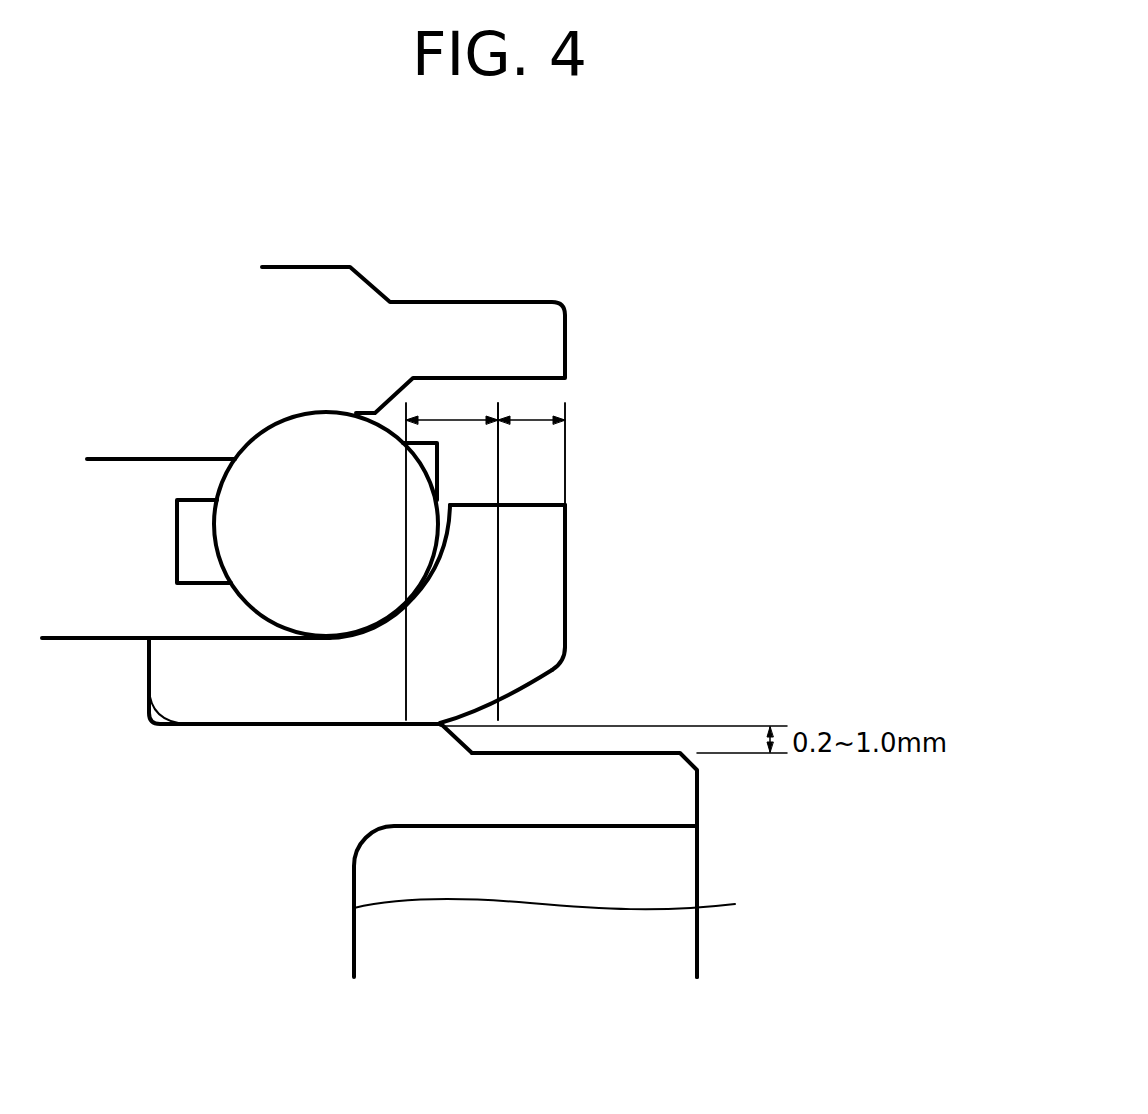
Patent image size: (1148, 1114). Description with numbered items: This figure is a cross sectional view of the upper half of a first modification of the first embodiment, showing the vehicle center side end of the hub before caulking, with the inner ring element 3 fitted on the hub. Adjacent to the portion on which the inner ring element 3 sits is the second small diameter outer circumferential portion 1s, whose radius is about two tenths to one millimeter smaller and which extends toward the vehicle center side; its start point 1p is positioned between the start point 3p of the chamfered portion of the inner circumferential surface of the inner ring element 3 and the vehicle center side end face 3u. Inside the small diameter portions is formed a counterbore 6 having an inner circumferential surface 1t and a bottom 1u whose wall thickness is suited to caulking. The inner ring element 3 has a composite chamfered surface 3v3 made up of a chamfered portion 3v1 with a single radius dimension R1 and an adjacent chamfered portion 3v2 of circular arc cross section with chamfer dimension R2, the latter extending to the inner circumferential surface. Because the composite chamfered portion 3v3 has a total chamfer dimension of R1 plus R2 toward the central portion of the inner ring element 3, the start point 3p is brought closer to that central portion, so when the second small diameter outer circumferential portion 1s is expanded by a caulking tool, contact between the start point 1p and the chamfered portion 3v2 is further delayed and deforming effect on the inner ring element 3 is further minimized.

The inner ring element 3 is at (532, 600).
The end face 3u is at (563, 515).
The start point of the chamfered portion 3p is at (403, 723).
The chamfered portion 3v1 is at (553, 670).
The chamfered portion 3v2 is at (503, 718).
The composite chamfered surface 3v3 is at (589, 660).
The start point of the second small diameter outer circumferential portion 1p is at (440, 723).
The second small diameter outer circumferential portion 1s is at (638, 753).
The inner circumferential surface 1t is at (560, 826).
The bottom 1u is at (575, 905).
The counterbore 6 is at (637, 952).
The radius dimension R1 is at (530, 417).
The chamfer dimension R2 is at (450, 417).